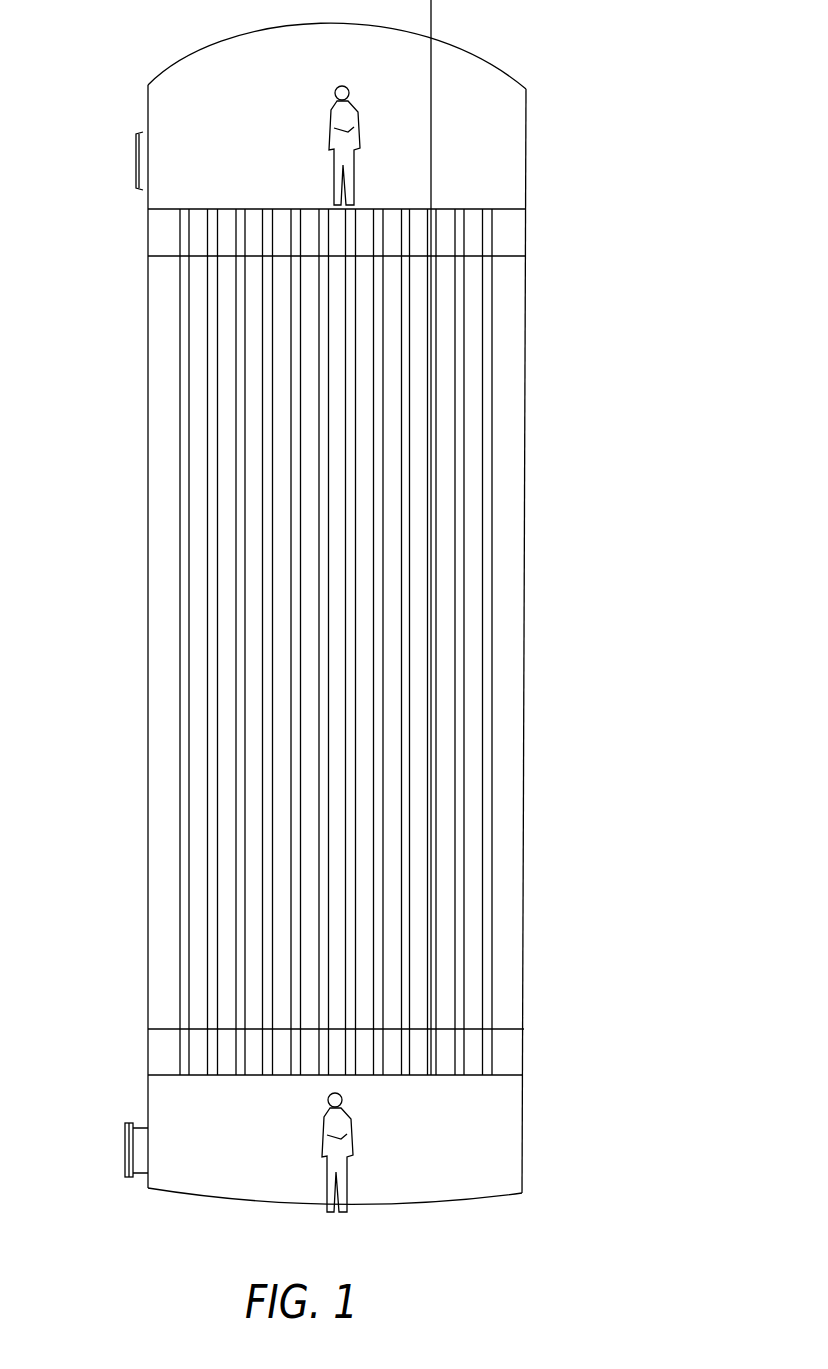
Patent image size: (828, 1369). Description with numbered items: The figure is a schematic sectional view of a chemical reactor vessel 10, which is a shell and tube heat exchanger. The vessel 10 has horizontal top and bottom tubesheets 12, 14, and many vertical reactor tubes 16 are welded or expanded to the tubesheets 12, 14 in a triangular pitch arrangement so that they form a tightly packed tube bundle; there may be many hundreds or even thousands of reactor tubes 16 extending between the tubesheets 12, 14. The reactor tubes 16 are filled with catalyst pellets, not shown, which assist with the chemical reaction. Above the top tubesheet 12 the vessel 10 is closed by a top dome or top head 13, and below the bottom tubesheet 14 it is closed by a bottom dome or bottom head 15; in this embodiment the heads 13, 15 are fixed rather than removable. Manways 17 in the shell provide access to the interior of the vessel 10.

The chemical reactor vessel 10 is at (607, 372).
The top tubesheet 12 is at (526, 230).
The top dome 13 is at (193, 57).
The bottom tubesheet 14 is at (517, 1052).
The bottom dome 15 is at (522, 1193).
The reactor tubes 16 is at (412, 580).
The manways 17 is at (143, 180).